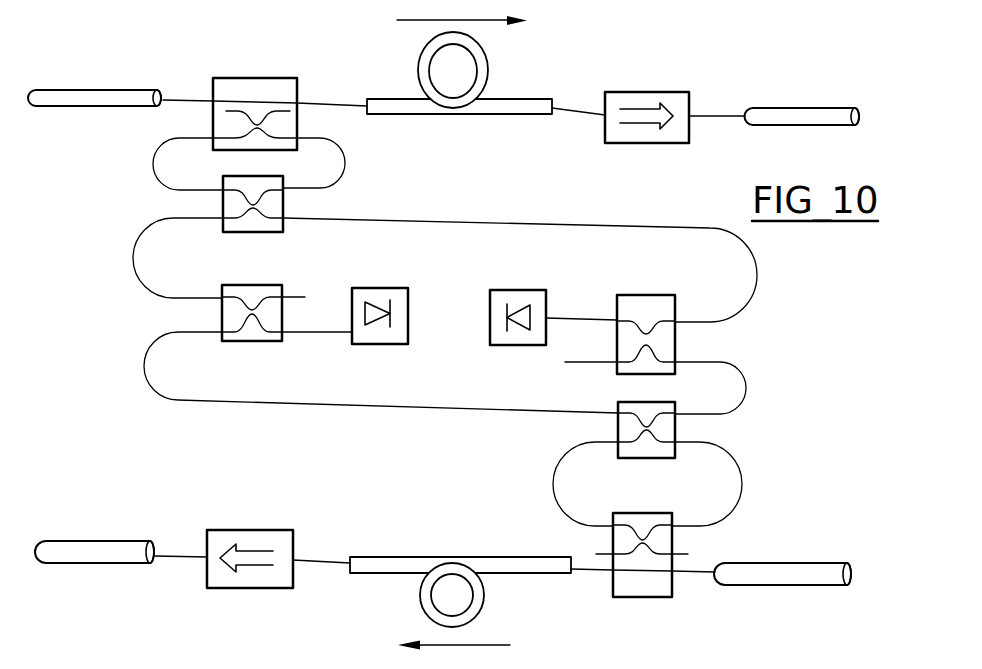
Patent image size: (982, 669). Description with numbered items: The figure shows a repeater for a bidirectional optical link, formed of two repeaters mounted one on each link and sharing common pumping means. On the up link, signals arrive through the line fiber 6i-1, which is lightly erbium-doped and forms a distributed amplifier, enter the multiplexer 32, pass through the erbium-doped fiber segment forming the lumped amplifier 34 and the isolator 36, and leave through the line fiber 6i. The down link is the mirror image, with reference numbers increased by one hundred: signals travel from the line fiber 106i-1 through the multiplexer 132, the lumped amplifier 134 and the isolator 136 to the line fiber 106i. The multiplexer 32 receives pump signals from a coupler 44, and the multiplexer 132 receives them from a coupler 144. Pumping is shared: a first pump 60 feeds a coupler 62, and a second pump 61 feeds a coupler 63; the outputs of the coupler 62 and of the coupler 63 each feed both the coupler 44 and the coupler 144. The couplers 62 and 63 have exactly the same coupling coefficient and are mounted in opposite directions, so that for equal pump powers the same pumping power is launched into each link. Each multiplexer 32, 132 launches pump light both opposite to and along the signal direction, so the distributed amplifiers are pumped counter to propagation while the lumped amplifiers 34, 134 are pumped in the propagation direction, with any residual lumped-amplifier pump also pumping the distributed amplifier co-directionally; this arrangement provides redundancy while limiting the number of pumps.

The line fiber 6i-1 is at (64, 90).
The multiplexer 32 is at (247, 78).
The lumped amplifier 34 is at (392, 99).
The isolator 36 is at (648, 92).
The line fiber 6i is at (802, 108).
The coupler 44 is at (223, 200).
The coupler 62 is at (252, 285).
The first pump 60 is at (376, 288).
The second pump 61 is at (522, 290).
The coupler 63 is at (643, 295).
The coupler 144 is at (618, 404).
The multiplexer 132 is at (645, 597).
The lumped amplifier 134 is at (485, 600).
The isolator 136 is at (245, 530).
The line fiber 106i is at (98, 541).
The line fiber 106i-1 is at (790, 563).